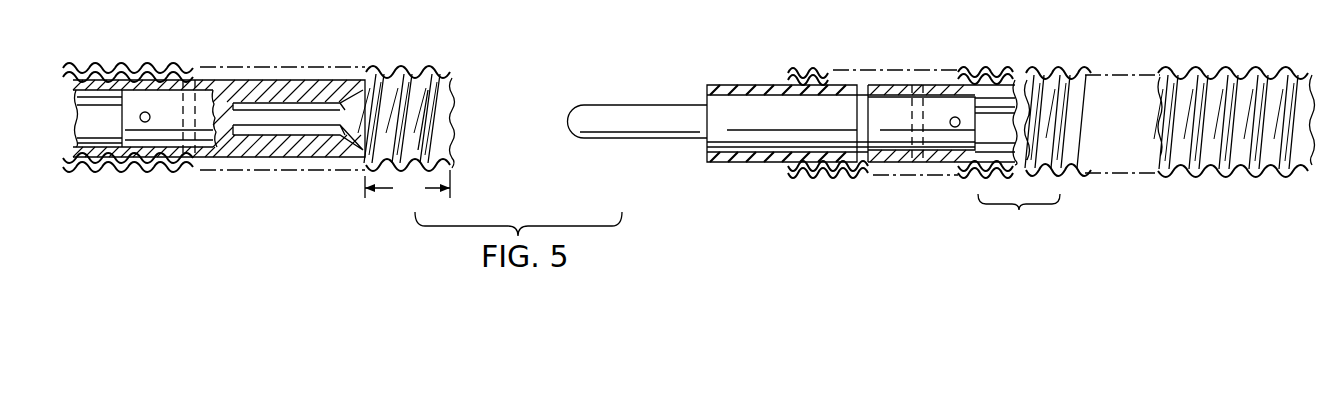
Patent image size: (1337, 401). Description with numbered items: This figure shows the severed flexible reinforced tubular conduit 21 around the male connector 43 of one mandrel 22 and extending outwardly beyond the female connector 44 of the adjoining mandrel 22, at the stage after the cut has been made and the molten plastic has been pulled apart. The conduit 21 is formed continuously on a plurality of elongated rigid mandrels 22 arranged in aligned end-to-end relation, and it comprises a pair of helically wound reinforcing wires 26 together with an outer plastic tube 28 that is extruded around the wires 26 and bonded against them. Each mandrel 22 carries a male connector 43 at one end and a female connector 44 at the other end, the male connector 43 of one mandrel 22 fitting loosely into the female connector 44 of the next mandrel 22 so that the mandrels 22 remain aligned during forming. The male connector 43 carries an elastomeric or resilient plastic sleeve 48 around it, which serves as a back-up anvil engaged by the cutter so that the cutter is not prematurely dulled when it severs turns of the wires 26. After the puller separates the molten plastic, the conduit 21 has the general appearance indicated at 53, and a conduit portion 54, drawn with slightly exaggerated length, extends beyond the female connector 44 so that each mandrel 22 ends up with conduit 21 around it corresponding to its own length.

The flexible reinforced tubular conduit 21 is at (422, 72).
The elongated rigid mandrel 22 is at (251, 80).
The helically wound reinforcing wire 26 is at (437, 125).
The outer plastic tube 28 is at (808, 73).
The male connector 43 is at (742, 102).
The female connector 44 is at (310, 93).
The elastomeric sleeve 48 is at (773, 162).
The conduit appearance after pulling apart 53 is at (455, 95).
The conduit portion 54 is at (407, 186).